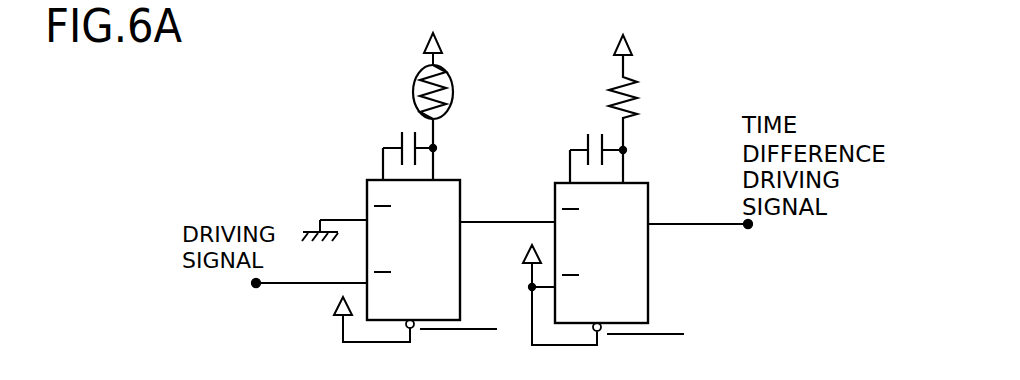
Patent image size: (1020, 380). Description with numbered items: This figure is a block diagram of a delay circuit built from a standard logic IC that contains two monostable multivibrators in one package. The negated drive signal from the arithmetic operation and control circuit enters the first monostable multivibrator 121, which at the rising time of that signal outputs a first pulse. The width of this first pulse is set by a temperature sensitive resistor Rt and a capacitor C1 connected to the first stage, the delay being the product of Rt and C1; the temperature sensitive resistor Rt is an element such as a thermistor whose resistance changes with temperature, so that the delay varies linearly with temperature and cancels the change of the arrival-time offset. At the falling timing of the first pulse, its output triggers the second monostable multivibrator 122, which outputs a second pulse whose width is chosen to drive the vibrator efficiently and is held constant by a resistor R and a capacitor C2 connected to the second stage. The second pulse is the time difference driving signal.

The monostable multivibrator 121 is at (453, 182).
The second monostable multivibrator 122 is at (641, 184).
The capacitor C1 is at (410, 140).
The capacitor C2 is at (598, 141).
The temperature sensitive resistor Rt is at (447, 92).
The resistor R is at (634, 86).